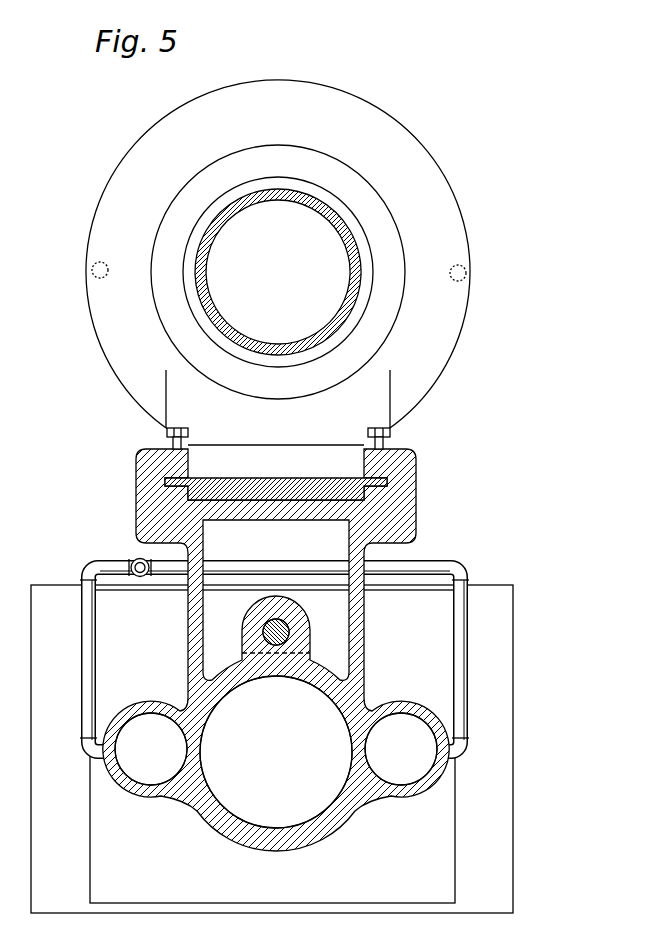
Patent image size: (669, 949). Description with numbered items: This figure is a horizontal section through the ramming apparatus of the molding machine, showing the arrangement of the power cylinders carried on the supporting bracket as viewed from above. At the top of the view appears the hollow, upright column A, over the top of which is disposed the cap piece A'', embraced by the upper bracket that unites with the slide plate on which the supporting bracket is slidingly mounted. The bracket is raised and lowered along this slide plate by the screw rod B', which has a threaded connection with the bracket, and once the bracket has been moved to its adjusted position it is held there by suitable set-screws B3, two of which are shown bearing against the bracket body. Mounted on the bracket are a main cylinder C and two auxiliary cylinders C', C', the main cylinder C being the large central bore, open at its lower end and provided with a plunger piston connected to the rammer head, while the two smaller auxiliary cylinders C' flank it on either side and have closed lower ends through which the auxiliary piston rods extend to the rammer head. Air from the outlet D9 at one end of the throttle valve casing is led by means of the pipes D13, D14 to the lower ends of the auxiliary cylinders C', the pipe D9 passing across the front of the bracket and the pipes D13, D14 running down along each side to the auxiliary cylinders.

The hollow upright column A is at (278, 272).
The cap piece A'' is at (276, 476).
The set-screws B3 is at (188, 431).
The screw rod B' is at (276, 650).
The main cylinder C is at (276, 752).
The auxiliary cylinders C' is at (276, 749).
The outlet pipe D9 is at (139, 558).
The pipe D13 is at (97, 666).
The pipe D14 is at (466, 673).